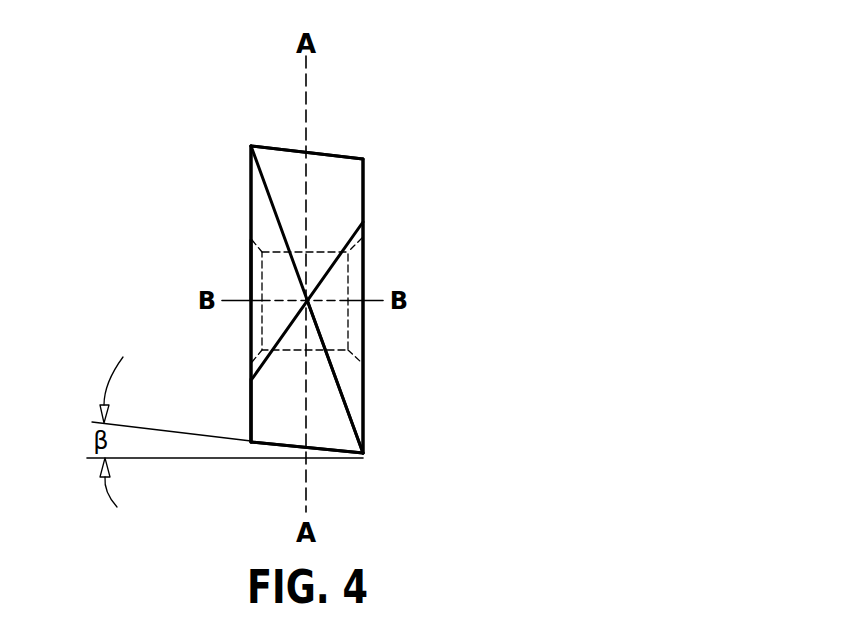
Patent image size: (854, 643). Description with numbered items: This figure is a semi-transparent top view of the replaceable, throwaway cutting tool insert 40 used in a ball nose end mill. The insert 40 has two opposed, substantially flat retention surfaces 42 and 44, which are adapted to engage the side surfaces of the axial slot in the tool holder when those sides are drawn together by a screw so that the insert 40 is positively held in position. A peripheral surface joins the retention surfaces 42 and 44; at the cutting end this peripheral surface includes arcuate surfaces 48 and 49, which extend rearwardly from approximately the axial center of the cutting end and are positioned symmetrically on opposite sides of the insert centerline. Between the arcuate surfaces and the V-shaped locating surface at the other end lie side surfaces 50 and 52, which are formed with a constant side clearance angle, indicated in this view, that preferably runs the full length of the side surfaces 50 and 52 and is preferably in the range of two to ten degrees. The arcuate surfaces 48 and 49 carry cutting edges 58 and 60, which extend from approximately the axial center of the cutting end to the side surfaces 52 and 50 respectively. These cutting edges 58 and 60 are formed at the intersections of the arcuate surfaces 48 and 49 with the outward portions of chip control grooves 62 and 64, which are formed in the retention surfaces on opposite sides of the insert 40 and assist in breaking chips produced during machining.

The cutting tool insert 40 is at (428, 95).
The retention surface 42 is at (363, 177).
The retention surface 44 is at (251, 268).
The arcuate surface 48 is at (265, 405).
The arcuate surface 49 is at (343, 200).
The side surface 50 is at (330, 155).
The side surface 52 is at (363, 454).
The cutting edge 58 is at (343, 398).
The cutting edge 60 is at (268, 173).
The chip control groove 62 is at (348, 372).
The chip control groove 64 is at (258, 210).